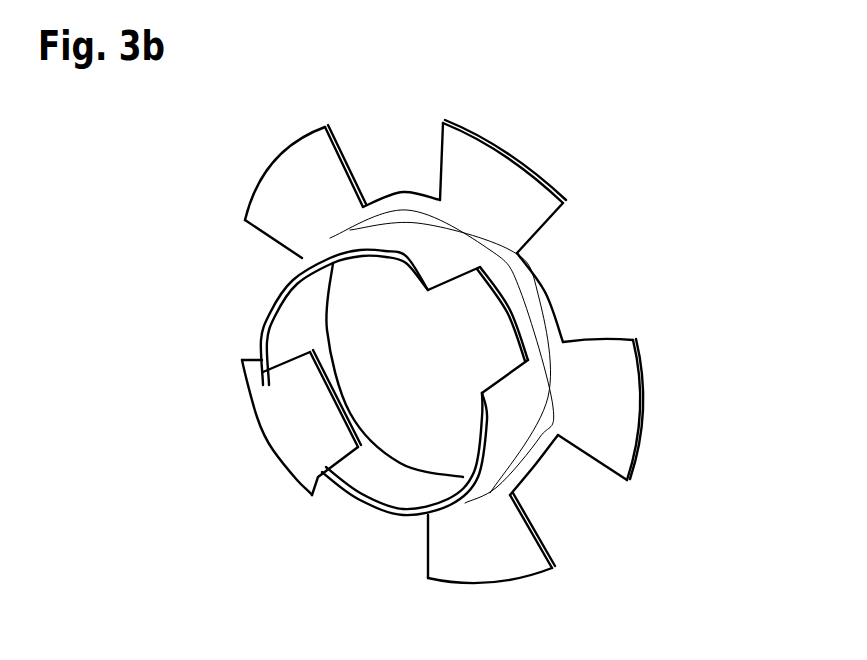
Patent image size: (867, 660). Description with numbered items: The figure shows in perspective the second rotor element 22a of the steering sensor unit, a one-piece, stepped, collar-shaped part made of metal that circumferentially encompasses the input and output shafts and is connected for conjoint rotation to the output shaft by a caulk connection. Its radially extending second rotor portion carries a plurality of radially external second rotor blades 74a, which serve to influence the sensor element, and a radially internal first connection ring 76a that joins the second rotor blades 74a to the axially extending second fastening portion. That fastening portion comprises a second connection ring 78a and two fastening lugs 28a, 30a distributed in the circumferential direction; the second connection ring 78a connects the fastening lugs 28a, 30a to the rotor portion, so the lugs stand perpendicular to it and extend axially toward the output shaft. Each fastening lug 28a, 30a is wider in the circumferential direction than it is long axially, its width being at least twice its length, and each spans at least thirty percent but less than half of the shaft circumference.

The second rotor element 22a is at (662, 197).
The fastening lug 28a is at (265, 303).
The fastening lug 30a is at (500, 435).
The second rotor blades 74a is at (492, 168).
The first connection ring 76a is at (547, 292).
The second connection ring 78a is at (510, 317).